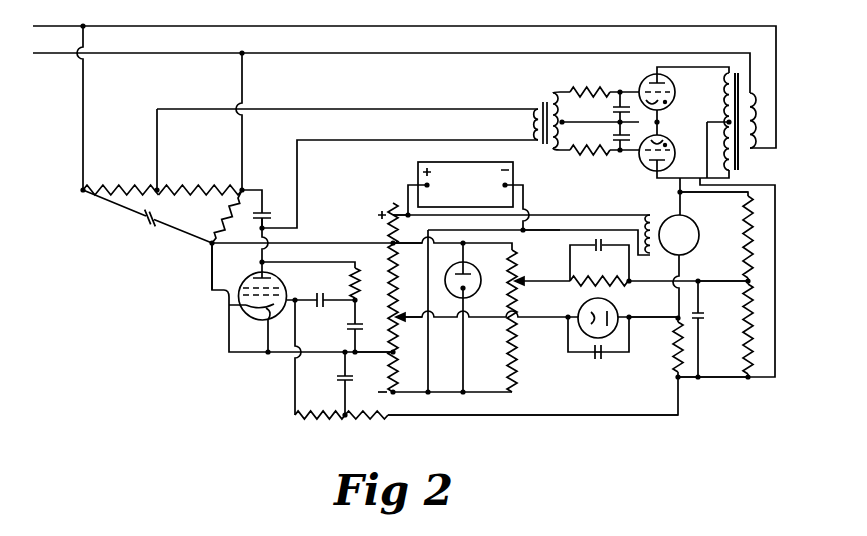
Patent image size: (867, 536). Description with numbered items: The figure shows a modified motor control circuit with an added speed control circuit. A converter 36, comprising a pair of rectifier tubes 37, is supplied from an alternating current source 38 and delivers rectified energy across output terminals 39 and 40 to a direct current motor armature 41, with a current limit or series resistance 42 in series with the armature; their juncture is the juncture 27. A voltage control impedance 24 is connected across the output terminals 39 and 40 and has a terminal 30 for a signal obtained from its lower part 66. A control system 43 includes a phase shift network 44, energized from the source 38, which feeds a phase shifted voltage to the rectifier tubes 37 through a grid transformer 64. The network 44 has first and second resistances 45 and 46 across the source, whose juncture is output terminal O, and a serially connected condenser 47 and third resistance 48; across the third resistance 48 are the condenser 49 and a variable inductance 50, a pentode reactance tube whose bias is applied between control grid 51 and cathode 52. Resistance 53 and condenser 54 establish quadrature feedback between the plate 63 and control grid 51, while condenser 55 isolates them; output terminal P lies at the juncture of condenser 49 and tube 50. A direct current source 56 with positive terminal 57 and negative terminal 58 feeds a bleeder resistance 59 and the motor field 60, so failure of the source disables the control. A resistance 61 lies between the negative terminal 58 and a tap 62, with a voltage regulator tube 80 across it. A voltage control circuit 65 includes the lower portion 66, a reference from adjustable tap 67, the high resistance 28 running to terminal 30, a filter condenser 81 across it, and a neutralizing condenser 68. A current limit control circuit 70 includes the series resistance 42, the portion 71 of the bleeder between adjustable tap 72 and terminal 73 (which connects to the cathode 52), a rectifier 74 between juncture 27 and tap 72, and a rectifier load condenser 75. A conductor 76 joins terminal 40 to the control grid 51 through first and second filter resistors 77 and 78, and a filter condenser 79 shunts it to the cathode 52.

The alternating current source 38 is at (256, 33).
The first resistance 45 is at (111, 186).
The second resistance 46 is at (197, 186).
The condenser 47 is at (147, 229).
The third resistance 48 is at (222, 214).
The condenser 49 is at (267, 210).
The phase shift network 44 is at (252, 238).
The control system 43 is at (206, 351).
The variable inductance 50 is at (283, 285).
The plate 63 is at (257, 276).
The control grid 51 is at (232, 307).
The cathode 52 is at (263, 316).
The condenser 55 is at (323, 297).
The resistance 53 is at (360, 272).
The condenser 54 is at (358, 324).
The portion of the bleeder resistance 71 is at (389, 336).
The terminal 73 is at (396, 352).
The adjustable tap 72 is at (401, 316).
The bleeder resistance 59 is at (390, 265).
The tap 62 is at (389, 240).
The positive terminal 57 is at (395, 211).
The filter condenser 79 is at (337, 377).
The second filter resistor 78 is at (330, 411).
The first filter resistor 77 is at (380, 411).
The direct current source 56 is at (440, 164).
The negative terminal 58 is at (526, 233).
The voltage regulator tube 80 is at (479, 273).
The resistance 61 is at (521, 275).
The adjustable tap 67 is at (523, 285).
The voltage control circuit 65 is at (577, 307).
The high resistance 28 is at (603, 276).
The filter condenser 81 is at (597, 251).
The current limit control circuit 70 is at (559, 342).
The rectifier 74 is at (609, 342).
The rectifier load condenser 75 is at (592, 359).
The conductor 76 is at (561, 416).
The juncture 27 is at (675, 317).
The series resistance 42 is at (672, 363).
The output terminal 40 is at (699, 380).
The neutralizing condenser 68 is at (704, 320).
The lower part 66 is at (757, 327).
The terminal 30 is at (748, 281).
The voltage control impedance 24 is at (771, 224).
The direct current motor armature 41 is at (695, 222).
The output terminal 39 is at (696, 194).
The motor field 60 is at (648, 220).
The converter 36 is at (707, 102).
The rectifier tubes 37 is at (668, 140).
The grid transformer 64 is at (534, 95).